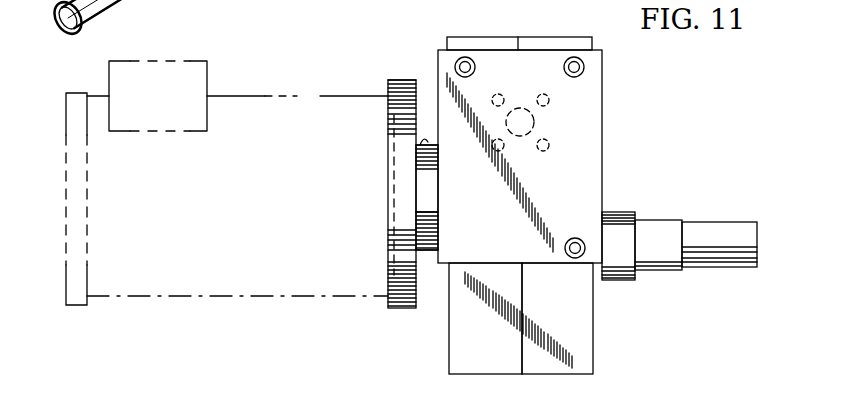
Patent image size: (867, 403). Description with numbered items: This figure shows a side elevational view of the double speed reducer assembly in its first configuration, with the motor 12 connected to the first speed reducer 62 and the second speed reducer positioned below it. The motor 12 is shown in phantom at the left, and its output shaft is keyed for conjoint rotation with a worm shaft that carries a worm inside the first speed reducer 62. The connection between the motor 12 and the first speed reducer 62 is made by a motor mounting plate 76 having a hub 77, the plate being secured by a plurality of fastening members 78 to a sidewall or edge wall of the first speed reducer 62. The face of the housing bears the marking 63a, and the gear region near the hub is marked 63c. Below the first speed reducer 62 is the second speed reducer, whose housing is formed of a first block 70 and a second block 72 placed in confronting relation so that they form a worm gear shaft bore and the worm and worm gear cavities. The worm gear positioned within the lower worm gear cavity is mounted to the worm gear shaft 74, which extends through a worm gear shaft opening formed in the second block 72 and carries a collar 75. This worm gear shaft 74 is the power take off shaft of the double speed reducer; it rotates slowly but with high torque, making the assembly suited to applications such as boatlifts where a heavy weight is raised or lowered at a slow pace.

The motor 12 is at (297, 96).
The first speed reducer 62 is at (605, 88).
The housing face 63a is at (500, 233).
The gear portion 63c is at (438, 248).
The first block 70 is at (470, 352).
The second block 72 is at (595, 352).
The worm gear shaft 74 is at (715, 222).
The collar 75 is at (650, 220).
The motor mounting plate 76 is at (395, 80).
The hub 77 is at (428, 143).
The fastening members 78 is at (238, 0).